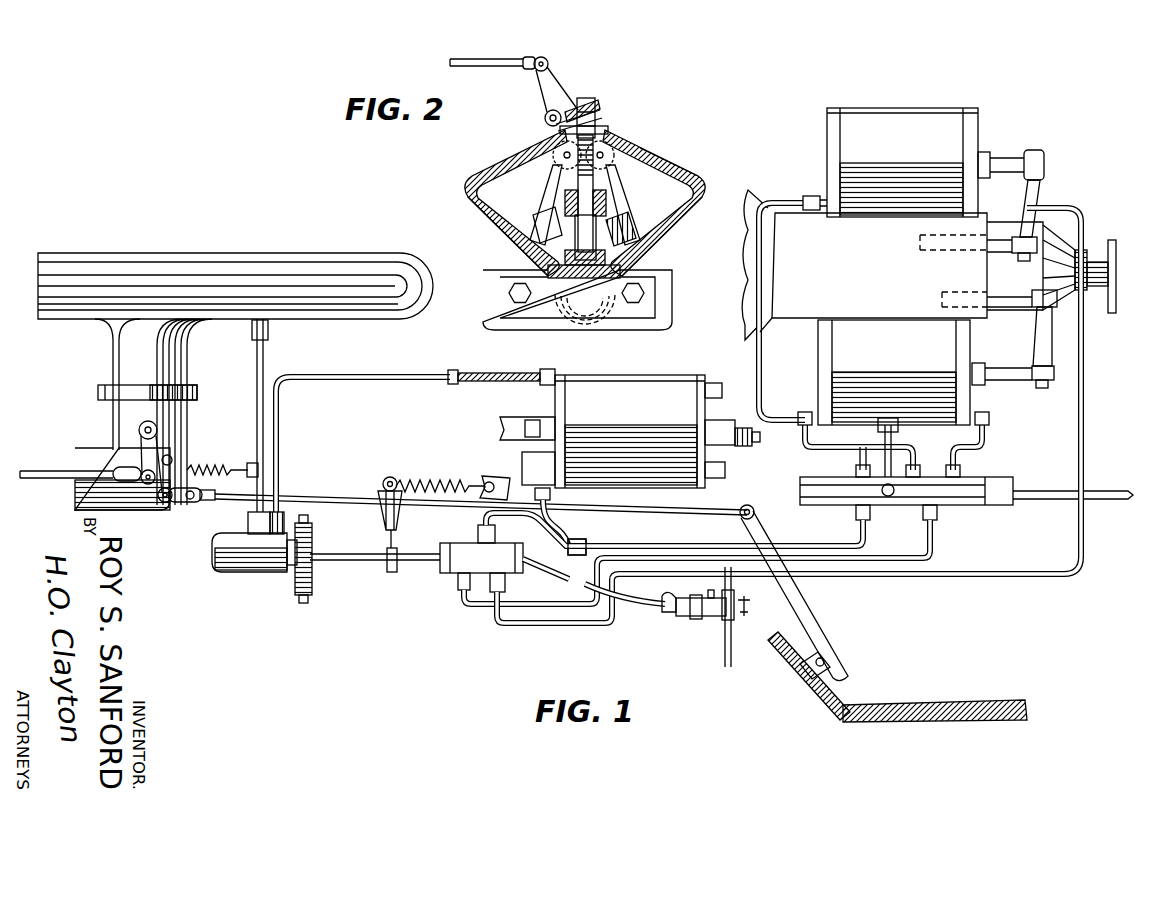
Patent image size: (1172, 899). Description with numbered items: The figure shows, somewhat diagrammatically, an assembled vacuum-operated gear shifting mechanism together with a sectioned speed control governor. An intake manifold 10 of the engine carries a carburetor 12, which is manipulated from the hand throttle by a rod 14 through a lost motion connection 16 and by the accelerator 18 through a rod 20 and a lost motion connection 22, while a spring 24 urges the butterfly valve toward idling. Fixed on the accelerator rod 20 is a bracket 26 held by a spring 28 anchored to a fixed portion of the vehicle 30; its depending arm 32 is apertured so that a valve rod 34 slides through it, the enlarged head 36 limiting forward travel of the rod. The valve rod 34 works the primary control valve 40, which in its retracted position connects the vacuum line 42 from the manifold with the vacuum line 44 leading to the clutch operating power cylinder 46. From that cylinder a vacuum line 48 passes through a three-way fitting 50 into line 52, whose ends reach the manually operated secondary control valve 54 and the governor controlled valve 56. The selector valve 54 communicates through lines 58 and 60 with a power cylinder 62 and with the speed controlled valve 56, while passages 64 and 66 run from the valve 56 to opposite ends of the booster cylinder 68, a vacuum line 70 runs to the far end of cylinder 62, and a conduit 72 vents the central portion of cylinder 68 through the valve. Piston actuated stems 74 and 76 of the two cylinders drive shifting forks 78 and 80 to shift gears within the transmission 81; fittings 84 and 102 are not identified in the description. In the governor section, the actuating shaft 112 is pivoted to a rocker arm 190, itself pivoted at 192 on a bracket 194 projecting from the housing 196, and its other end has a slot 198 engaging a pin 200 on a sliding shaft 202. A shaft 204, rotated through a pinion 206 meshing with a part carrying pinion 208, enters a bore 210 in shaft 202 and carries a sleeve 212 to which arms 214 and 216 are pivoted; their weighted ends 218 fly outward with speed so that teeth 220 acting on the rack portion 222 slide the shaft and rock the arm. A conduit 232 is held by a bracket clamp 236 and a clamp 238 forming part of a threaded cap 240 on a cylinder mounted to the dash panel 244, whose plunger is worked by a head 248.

In FIG. 1, the intake manifold 10 is at (255, 263).
In FIG. 1, the carburetor 12 is at (112, 432).
In FIG. 1, the rod 14 is at (55, 478).
In FIG. 1, the lost motion connection 16 is at (150, 488).
In FIG. 1, the accelerator 18 is at (815, 620).
In FIG. 1, the rod 20 is at (310, 497).
In FIG. 1, the lost motion connection 22 is at (185, 502).
In FIG. 1, the spring 24 is at (205, 463).
In FIG. 1, the bracket 26 is at (385, 478).
In FIG. 1, the spring 28 is at (430, 480).
In FIG. 1, the fixed portion of the vehicle 30 is at (480, 478).
In FIG. 1, the depending arm 32 is at (386, 520).
In FIG. 1, the valve rod 34 is at (350, 563).
In FIG. 1, the enlarged head 36 is at (393, 573).
In FIG. 1, the primary control valve 40 is at (235, 558).
In FIG. 1, the vacuum line 42 is at (268, 372).
In FIG. 1, the vacuum line 44 is at (380, 377).
In FIG. 1, the clutch operating power cylinder 46 is at (640, 386).
In FIG. 1, the vacuum line 48 is at (565, 522).
In FIG. 1, the three-way fitting 50 is at (600, 545).
In FIG. 1, the line 52 is at (650, 557).
In FIG. 1, the secondary control valve 54 is at (455, 580).
In FIG. 1, the governor controlled valve 56 is at (975, 508).
In FIG. 1, the line 58 is at (520, 608).
In FIG. 1, the line 60 is at (560, 625).
In FIG. 1, the power cylinder 62 is at (960, 142).
In FIG. 1, the communicating passage 64 is at (792, 455).
In FIG. 1, the communicating passage 66 is at (985, 450).
In FIG. 1, the booster cylinder 68 is at (842, 350).
In FIG. 1, the vacuum line 70 is at (757, 375).
In FIG. 1, the conduit 72 is at (860, 452).
In FIG. 1, the piston actuated stem 74 is at (1000, 165).
In FIG. 1, the piston actuated stem 76 is at (1010, 388).
In FIG. 1, the shifting fork 78 is at (1036, 200).
In FIG. 1, the shifting fork 80 is at (1050, 350).
In FIG. 1, the transmission 81 is at (808, 237).
In FIG. 1, the cap 84 is at (745, 447).
In FIG. 1, the pipe connection 102 is at (508, 424).
In FIG. 1, the actuating shaft 112 is at (1105, 490).
In FIG. 2, the actuating shaft 112 is at (500, 67).
In FIG. 2, the rocker arm 190 is at (558, 95).
In FIG. 2, the pivot 192 is at (544, 123).
In FIG. 2, the bracket 194 is at (560, 131).
In FIG. 2, the housing 196 is at (688, 182).
In FIG. 2, the slot 198 is at (598, 100).
In FIG. 2, the pin 200 is at (602, 108).
In FIG. 2, the shaft 202 is at (600, 120).
In FIG. 2, the shaft 204 is at (610, 215).
In FIG. 2, the pinion 206 is at (628, 272).
In FIG. 2, the pinion 208 is at (548, 270).
In FIG. 2, the bore 210 is at (596, 186).
In FIG. 2, the sleeve 212 is at (625, 226).
In FIG. 2, the arm 214 is at (546, 196).
In FIG. 2, the arm 216 is at (660, 156).
In FIG. 2, the weights 218 is at (497, 228).
In FIG. 2, the teeth 220 is at (553, 160).
In FIG. 2, the rack portion 222 is at (560, 165).
In FIG. 1, the conduit 232 is at (627, 605).
In FIG. 1, the bracket clamp 236 is at (545, 580).
In FIG. 1, the clamp 238 is at (666, 614).
In FIG. 1, the threaded cap 240 is at (702, 617).
In FIG. 1, the dash panel 244 is at (733, 660).
In FIG. 1, the head 248 is at (750, 605).